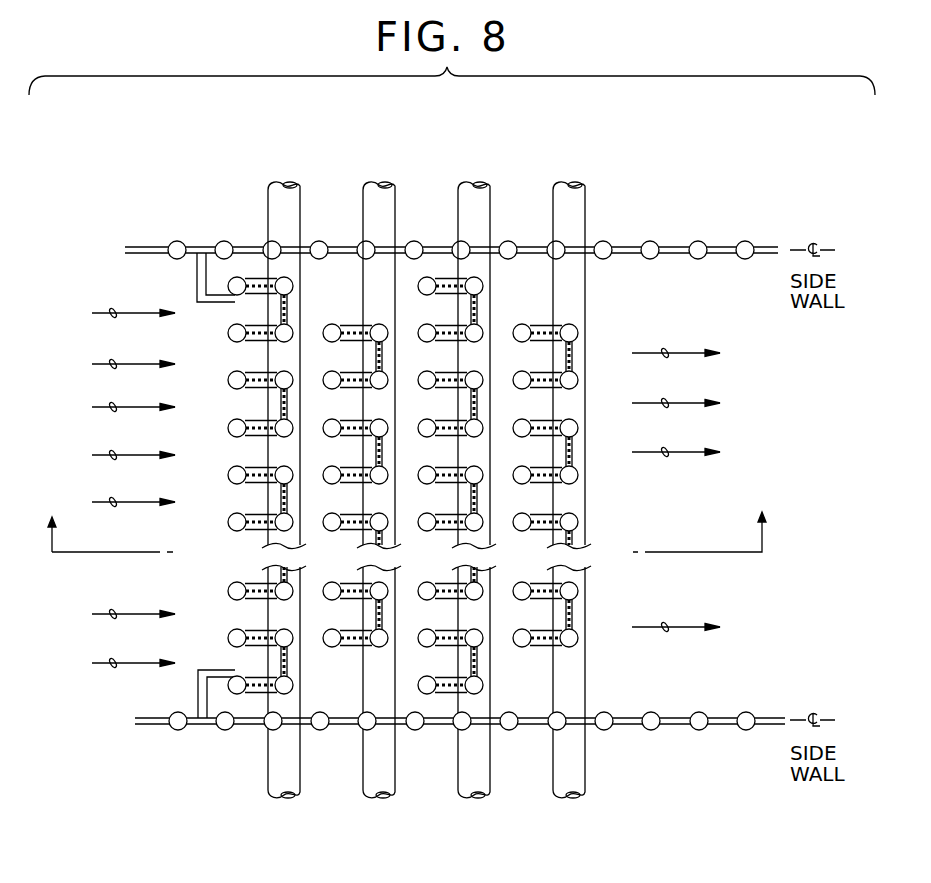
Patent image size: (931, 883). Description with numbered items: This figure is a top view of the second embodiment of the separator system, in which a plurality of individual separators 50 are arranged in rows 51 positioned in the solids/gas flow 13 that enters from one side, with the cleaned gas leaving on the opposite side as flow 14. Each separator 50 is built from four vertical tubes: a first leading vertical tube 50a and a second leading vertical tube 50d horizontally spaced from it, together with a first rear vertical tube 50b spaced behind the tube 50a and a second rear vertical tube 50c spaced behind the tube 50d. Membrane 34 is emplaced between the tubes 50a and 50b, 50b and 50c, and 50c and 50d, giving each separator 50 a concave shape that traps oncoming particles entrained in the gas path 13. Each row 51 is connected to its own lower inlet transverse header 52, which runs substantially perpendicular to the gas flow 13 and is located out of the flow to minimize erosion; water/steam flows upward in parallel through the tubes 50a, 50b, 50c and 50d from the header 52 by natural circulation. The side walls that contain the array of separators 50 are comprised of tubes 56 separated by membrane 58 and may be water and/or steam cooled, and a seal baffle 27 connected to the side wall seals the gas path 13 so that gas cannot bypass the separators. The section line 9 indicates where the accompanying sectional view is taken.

The section line 9- 9 is at (405, 522).
The solids/gas flow 13 is at (120, 500).
The outlet flow arrows 14 is at (665, 455).
The seal baffle 27 is at (198, 691).
The membrane 34 is at (257, 333).
The separator 50 is at (228, 502).
The first leading vertical tube 50a is at (228, 380).
The first rear vertical tube 50b is at (291, 373).
The second rear vertical tube 50c is at (291, 420).
The second leading vertical tube 50d is at (228, 428).
The row 51 is at (254, 803).
The lower transverse header 52 is at (372, 200).
The tubes 56 is at (700, 727).
The membrane 58 is at (673, 727).